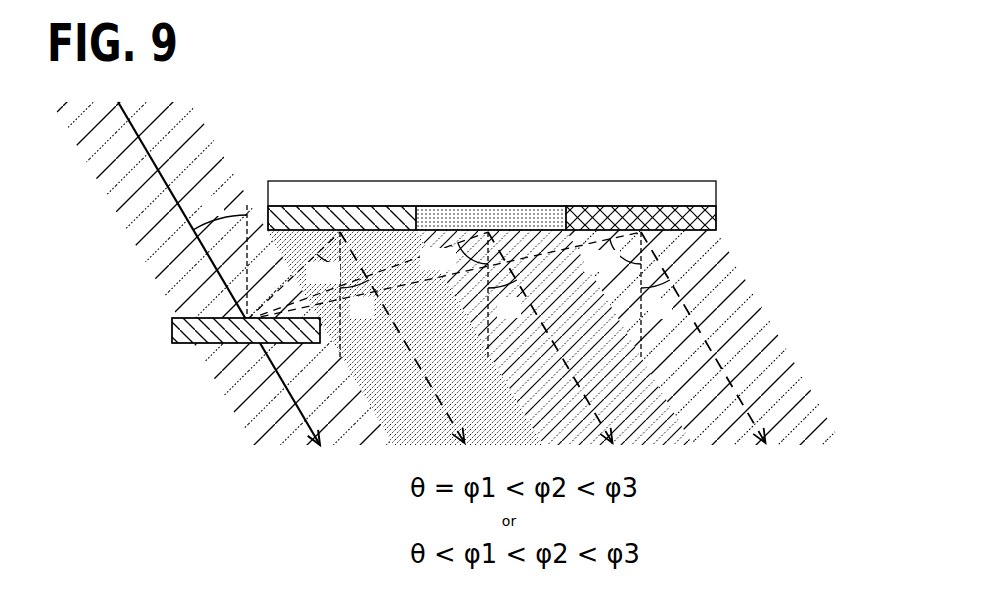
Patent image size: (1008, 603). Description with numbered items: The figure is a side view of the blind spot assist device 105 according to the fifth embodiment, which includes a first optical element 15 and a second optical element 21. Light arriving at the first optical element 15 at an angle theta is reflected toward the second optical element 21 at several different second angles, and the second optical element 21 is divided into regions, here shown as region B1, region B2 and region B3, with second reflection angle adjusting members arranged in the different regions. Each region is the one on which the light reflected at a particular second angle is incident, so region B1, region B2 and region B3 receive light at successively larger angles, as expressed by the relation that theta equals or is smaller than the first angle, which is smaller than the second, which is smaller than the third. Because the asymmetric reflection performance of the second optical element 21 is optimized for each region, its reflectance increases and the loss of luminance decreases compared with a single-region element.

The first optical element 15 is at (188, 344).
The second optical element 21 is at (652, 181).
The blind spot assist device 105 is at (742, 246).
The region B1 is at (364, 208).
The region B2 is at (499, 208).
The region B3 is at (610, 208).